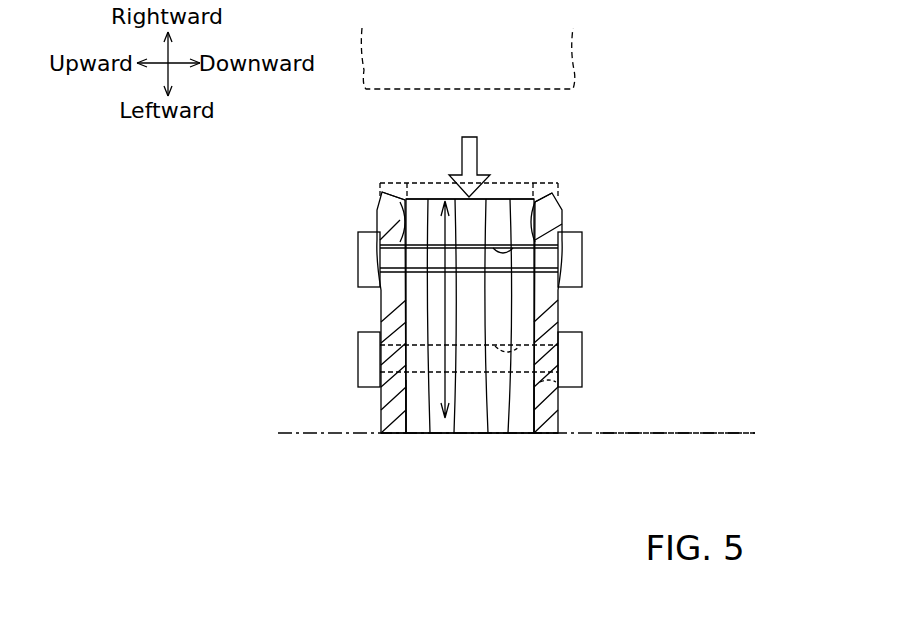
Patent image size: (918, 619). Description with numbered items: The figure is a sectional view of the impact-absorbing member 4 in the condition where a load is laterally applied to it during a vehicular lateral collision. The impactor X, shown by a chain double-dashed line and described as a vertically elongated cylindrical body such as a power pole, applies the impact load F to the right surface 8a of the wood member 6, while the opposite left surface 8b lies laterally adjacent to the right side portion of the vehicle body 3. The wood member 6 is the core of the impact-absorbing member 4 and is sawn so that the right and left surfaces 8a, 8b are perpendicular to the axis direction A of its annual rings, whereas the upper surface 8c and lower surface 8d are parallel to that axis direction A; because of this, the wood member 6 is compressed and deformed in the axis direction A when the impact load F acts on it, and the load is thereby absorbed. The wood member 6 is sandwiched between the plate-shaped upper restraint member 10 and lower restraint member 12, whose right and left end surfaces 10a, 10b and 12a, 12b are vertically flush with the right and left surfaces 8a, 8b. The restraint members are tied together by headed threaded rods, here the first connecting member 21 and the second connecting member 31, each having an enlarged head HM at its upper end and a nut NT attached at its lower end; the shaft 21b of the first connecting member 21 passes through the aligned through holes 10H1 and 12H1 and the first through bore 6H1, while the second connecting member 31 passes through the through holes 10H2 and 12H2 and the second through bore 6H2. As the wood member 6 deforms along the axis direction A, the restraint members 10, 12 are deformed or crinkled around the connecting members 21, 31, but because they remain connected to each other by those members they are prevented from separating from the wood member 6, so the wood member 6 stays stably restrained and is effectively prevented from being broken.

The body 3 is at (702, 432).
The impact-absorbing member 4 is at (672, 140).
The wood member 6 is at (523, 188).
The first pair of through bores 6H1 is at (522, 243).
The second pair of through bores 6H2 is at (505, 352).
The right surface 8a is at (421, 199).
The left surface 8b is at (470, 435).
The upper surface 8c is at (396, 406).
The lower surface 8d is at (548, 408).
The upper restraint member 10 is at (375, 191).
The right end surface of upper restraint member 10a is at (386, 187).
The left end surface of upper restraint member 10b is at (394, 435).
The first pair of through holes of upper restraint member 10H1 is at (372, 250).
The second pair of through holes of upper restraint member 10H2 is at (378, 325).
The lower restraint member 12 is at (573, 206).
The right end surface of lower restraint member 12a is at (567, 198).
The left end surface of lower restraint member 12b is at (548, 435).
The first pair of through holes of lower restraint member 12H1 is at (560, 283).
The second pair of through holes of lower restraint member 12H2 is at (540, 382).
The first connecting member 21 is at (418, 233).
The bolt shaft 21b is at (572, 247).
The second connecting member 31 is at (348, 372).
The nut NT is at (574, 262).
The head HM is at (367, 266).
The axis direction of annual rings A is at (450, 322).
The impact load F is at (480, 143).
The impactor X is at (573, 89).